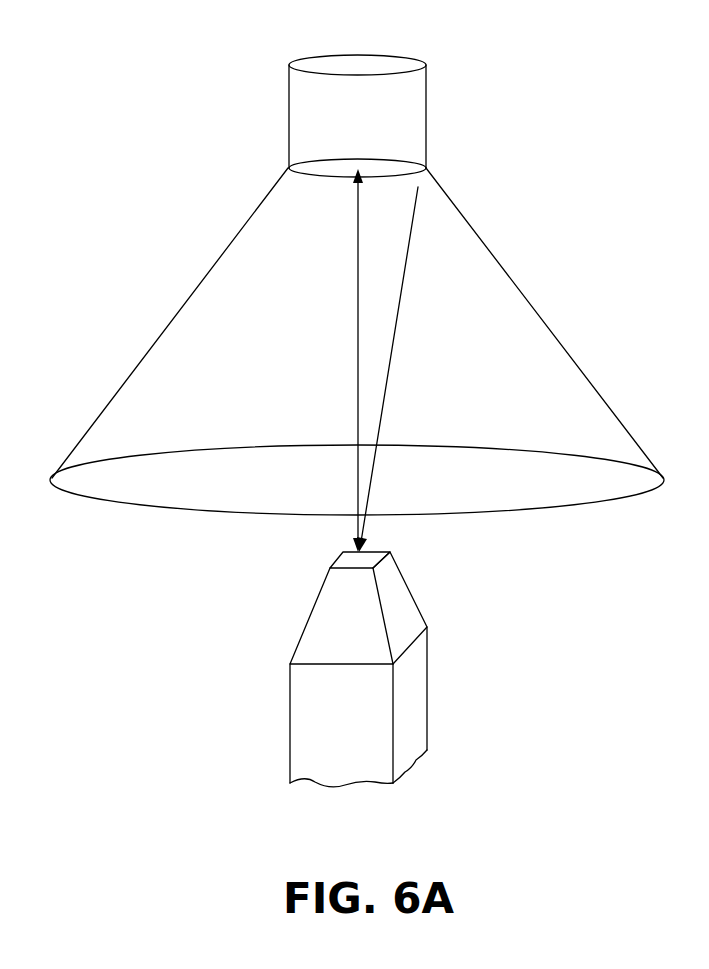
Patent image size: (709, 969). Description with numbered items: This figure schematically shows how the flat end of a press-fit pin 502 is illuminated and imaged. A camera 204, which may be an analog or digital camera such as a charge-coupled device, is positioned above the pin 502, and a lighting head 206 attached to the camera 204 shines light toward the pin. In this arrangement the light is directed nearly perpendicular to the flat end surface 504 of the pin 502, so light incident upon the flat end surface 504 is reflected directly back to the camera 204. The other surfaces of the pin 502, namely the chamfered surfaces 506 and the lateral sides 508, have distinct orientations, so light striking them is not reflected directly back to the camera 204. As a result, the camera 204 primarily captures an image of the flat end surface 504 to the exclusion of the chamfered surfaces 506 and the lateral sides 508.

The camera 204 is at (417, 112).
The lighting head 206 is at (503, 282).
The pin 502 is at (466, 760).
The flat end surface 504 is at (340, 565).
The chamfered surfaces 506 is at (408, 605).
The lateral sides 508 is at (418, 708).